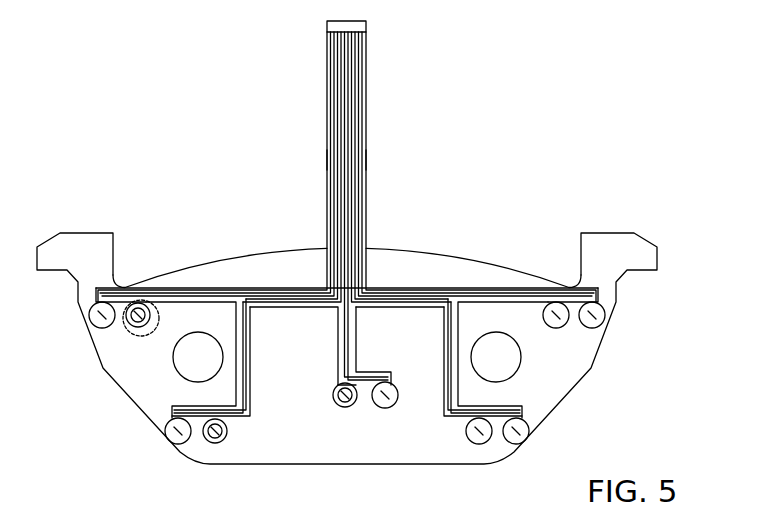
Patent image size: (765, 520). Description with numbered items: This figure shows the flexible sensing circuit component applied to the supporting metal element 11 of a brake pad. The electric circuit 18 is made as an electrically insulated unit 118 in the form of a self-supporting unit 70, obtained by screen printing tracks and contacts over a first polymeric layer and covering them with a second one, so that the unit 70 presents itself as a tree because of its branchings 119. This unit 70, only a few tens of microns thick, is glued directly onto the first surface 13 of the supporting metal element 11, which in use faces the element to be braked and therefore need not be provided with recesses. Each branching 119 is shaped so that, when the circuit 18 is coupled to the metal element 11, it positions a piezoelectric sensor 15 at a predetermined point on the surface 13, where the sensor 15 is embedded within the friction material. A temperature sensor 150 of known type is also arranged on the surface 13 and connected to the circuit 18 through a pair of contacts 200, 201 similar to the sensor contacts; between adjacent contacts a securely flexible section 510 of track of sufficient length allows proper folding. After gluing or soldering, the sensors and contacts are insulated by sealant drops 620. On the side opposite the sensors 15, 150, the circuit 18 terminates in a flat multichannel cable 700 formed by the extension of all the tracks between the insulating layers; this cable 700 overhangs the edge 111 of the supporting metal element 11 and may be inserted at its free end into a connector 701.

The supporting metal element 11 is at (360, 465).
The first surface 13 is at (285, 277).
The piezoelectric sensor 15 is at (134, 300).
The electric circuit 18 is at (411, 280).
The self-supporting unit 70 is at (335, 128).
The edge 111 is at (395, 242).
The electrically insulated unit 118 is at (482, 82).
The branching 119 is at (200, 290).
The temperature sensor 150 is at (341, 408).
The contact 200 is at (334, 395).
The contact 201 is at (392, 402).
The section of track 510 is at (190, 400).
The electrically insulating sealant drop 620 is at (135, 337).
The flat electric multichannel cable connection 700 is at (350, 155).
The connector 701 is at (362, 27).